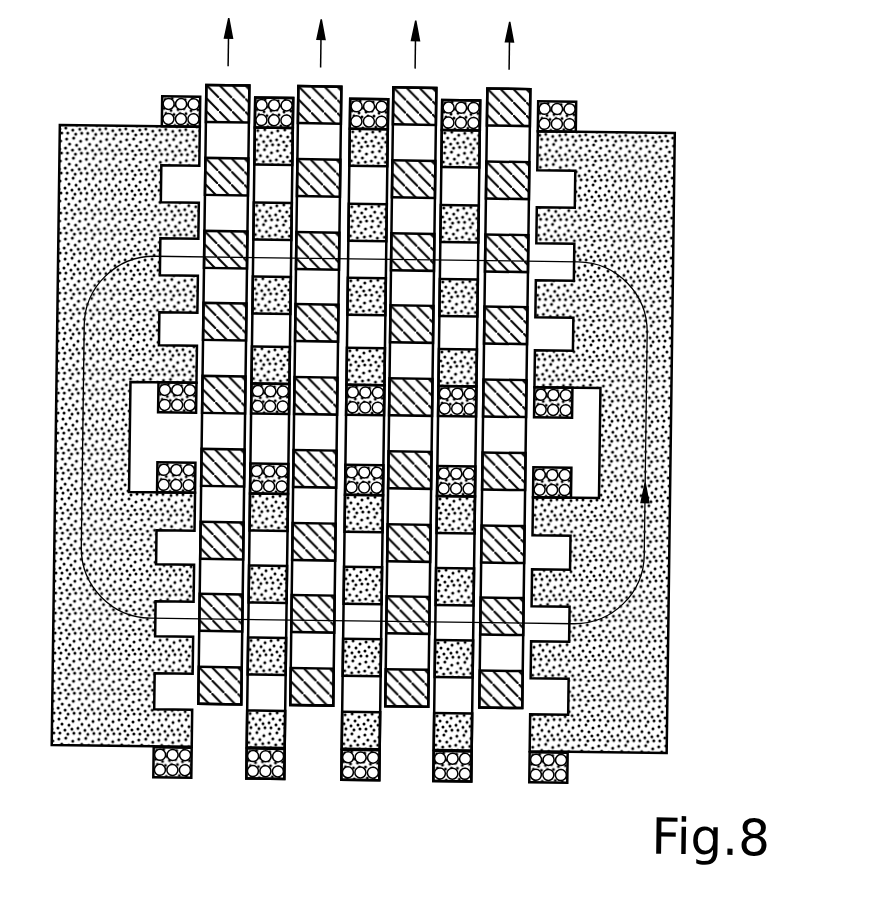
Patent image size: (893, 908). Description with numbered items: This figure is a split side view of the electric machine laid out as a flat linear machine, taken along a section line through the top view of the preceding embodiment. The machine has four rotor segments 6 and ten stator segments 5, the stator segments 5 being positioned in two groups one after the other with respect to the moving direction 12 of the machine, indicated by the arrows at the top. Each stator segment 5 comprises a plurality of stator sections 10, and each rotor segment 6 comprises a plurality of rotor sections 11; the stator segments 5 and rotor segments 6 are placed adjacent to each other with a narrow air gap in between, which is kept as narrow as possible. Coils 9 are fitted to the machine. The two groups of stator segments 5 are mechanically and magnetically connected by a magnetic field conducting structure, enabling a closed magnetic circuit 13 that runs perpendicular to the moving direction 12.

The stator segment 5 is at (363, 790).
The rotor segment 6 is at (319, 716).
The coil 9 is at (155, 766).
The stator section 10 is at (249, 730).
The rotor section 11 is at (224, 694).
The moving direction 12 is at (505, 51).
The closed magnetic circuit 13 is at (646, 449).